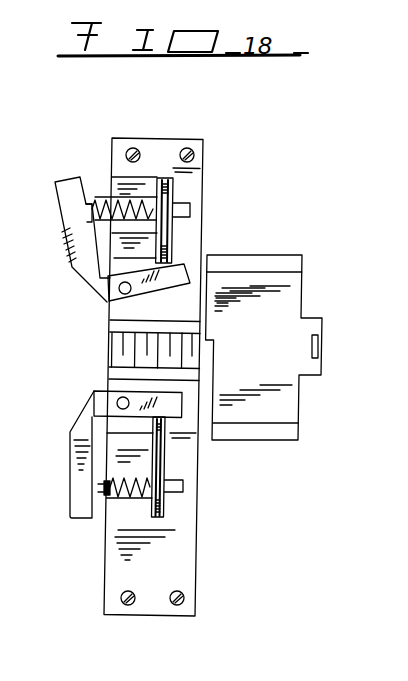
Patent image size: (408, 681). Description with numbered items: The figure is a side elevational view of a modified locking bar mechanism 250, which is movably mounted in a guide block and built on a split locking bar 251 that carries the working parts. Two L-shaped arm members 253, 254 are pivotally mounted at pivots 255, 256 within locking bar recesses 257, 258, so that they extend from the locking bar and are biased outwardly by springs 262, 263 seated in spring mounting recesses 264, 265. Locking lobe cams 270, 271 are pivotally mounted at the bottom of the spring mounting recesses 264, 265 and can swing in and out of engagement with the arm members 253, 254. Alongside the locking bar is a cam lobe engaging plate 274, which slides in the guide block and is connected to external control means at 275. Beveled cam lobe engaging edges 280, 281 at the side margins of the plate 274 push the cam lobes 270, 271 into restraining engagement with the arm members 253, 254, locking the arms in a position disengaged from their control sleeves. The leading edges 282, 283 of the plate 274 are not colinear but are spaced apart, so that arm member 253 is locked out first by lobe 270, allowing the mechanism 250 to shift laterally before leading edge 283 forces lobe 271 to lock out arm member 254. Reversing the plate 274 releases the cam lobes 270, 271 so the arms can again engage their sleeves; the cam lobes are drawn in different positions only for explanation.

The locking bar mechanism 250 is at (214, 201).
The split locking bar 251 is at (190, 137).
The L-shaped arm member 253 is at (72, 222).
The L-shaped arm member 254 is at (87, 434).
The pivot 255 is at (119, 292).
The pivot 256 is at (117, 402).
The locking bar recess 257 is at (207, 253).
The locking bar recess 258 is at (190, 422).
The spring 262 is at (107, 197).
The spring 263 is at (100, 499).
The spring mounting recess 264 is at (109, 196).
The spring mounting recess 265 is at (125, 493).
The locking lobe cam 270 is at (167, 178).
The locking lobe cam 271 is at (162, 512).
The cam lobe engaging plate 274 is at (285, 313).
The connection to external control means 275 is at (322, 320).
The beveled cam lobe engaging edge 280 is at (297, 262).
The beveled cam lobe engaging edge 281 is at (290, 435).
The leading edge 282 is at (207, 288).
The leading edge 283 is at (209, 396).